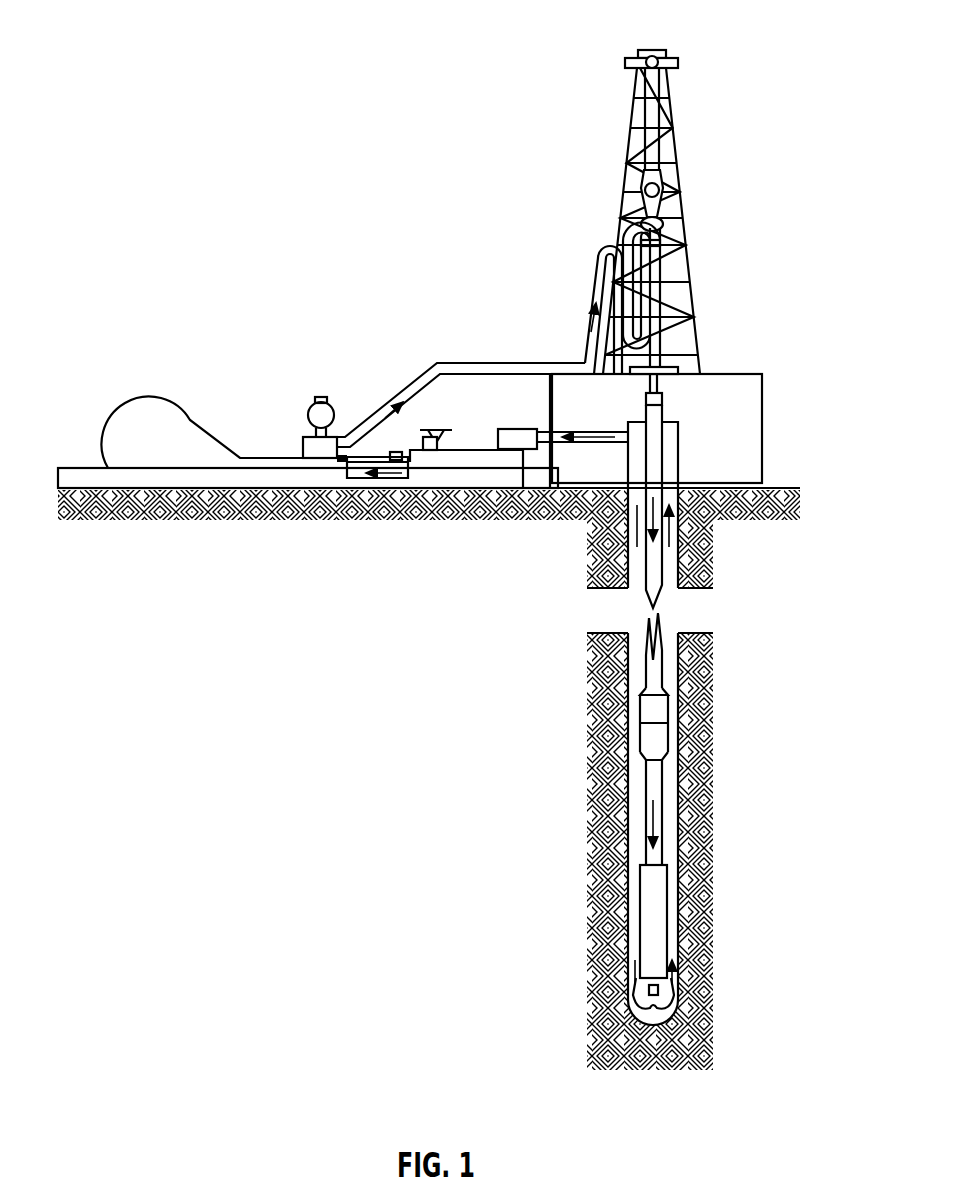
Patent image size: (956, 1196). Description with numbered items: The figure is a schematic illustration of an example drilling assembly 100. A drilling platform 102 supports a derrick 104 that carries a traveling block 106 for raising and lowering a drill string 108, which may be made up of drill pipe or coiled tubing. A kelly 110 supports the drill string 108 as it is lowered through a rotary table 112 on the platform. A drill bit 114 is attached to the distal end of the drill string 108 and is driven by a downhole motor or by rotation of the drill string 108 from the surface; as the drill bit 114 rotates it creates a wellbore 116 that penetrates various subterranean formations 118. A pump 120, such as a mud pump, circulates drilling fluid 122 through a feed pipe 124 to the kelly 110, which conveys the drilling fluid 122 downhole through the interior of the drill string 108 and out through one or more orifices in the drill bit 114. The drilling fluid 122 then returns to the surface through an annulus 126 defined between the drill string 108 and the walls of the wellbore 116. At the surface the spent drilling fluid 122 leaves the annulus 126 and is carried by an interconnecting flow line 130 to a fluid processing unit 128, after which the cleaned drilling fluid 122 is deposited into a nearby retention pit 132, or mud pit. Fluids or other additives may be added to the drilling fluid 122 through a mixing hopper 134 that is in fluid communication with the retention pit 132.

The drilling assembly 100 is at (174, 44).
The drilling platform 102 is at (762, 398).
The derrick 104 is at (673, 118).
The traveling block 106 is at (667, 173).
The drill string 108 is at (652, 562).
The kelly 110 is at (688, 293).
The rotary table 112 is at (680, 373).
The drill bit 114 is at (665, 997).
The wellbore 116 is at (690, 682).
The subterranean formations 118 is at (503, 701).
The pump 120 is at (171, 451).
The drilling fluid 122 is at (468, 361).
The feed pipe 124 is at (593, 432).
The annulus 126 is at (672, 808).
The fluid processing unit 128 is at (515, 428).
The flow line 130 is at (592, 450).
The retention pit 132 is at (503, 473).
The mixing hopper 134 is at (432, 452).